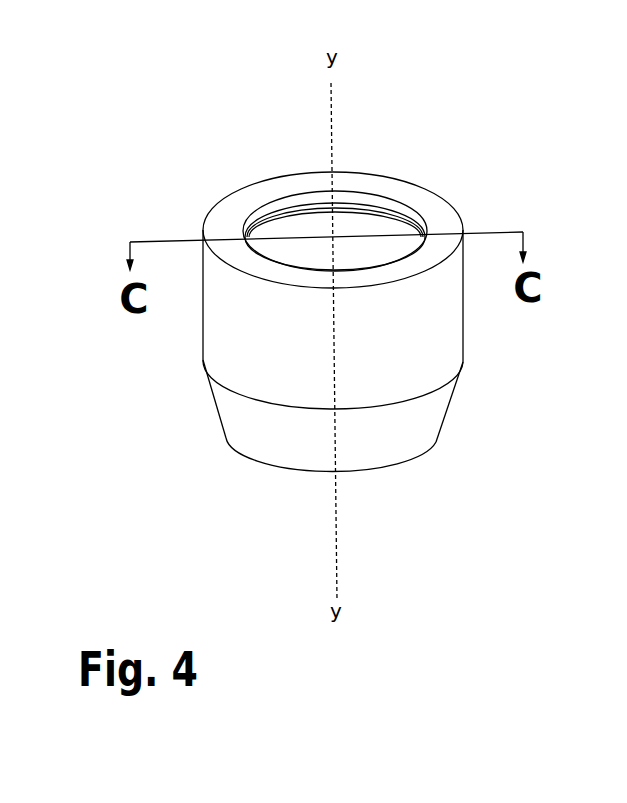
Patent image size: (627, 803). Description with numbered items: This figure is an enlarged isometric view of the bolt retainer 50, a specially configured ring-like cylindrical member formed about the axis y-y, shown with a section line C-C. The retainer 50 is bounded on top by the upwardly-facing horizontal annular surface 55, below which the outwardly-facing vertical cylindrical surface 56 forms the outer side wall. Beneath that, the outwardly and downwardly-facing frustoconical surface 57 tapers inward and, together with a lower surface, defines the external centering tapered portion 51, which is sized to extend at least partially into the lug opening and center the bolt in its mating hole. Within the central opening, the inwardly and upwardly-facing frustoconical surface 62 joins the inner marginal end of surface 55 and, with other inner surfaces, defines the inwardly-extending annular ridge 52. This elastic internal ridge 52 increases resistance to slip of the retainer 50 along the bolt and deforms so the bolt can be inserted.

The retainer 50 is at (457, 158).
The external centering tapered portion 51 is at (205, 421).
The inwardly-extending annular ridge 52 is at (310, 213).
The upwardly-facing horizontal annular surface 55 is at (243, 203).
The outwardly-facing vertical cylindrical surface 56 is at (427, 337).
The outwardly and downwardly-facing frustoconical surface 57 is at (385, 430).
The inwardly and upwardly-facing frustoconical surface 62 is at (393, 209).